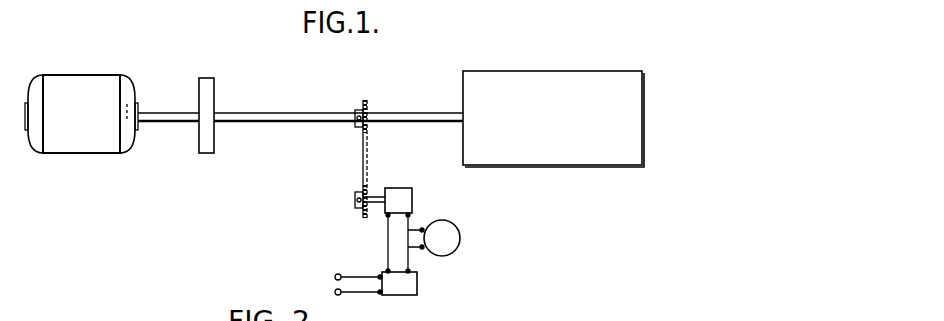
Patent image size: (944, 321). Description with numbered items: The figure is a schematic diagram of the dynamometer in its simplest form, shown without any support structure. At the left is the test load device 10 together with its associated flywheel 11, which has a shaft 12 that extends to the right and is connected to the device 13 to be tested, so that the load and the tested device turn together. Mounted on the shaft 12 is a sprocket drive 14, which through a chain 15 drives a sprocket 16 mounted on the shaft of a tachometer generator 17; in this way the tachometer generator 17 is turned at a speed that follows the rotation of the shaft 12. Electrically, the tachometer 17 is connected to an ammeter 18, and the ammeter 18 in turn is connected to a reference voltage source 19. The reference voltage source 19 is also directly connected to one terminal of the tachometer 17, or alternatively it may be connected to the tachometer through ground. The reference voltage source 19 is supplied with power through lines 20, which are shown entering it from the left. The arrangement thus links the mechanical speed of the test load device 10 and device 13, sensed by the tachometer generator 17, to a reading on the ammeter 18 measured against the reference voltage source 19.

The test load device 10 is at (90, 121).
The flywheel 11 is at (210, 90).
The shaft 12 is at (286, 114).
The device to be tested 13 is at (563, 117).
The sprocket drive 14 is at (368, 104).
The chain 15 is at (372, 175).
The sprocket 16 is at (357, 212).
The tachometer generator 17 is at (412, 202).
The ammeter 18 is at (460, 244).
The reference voltage source 19 is at (418, 292).
The lines 20 is at (373, 279).